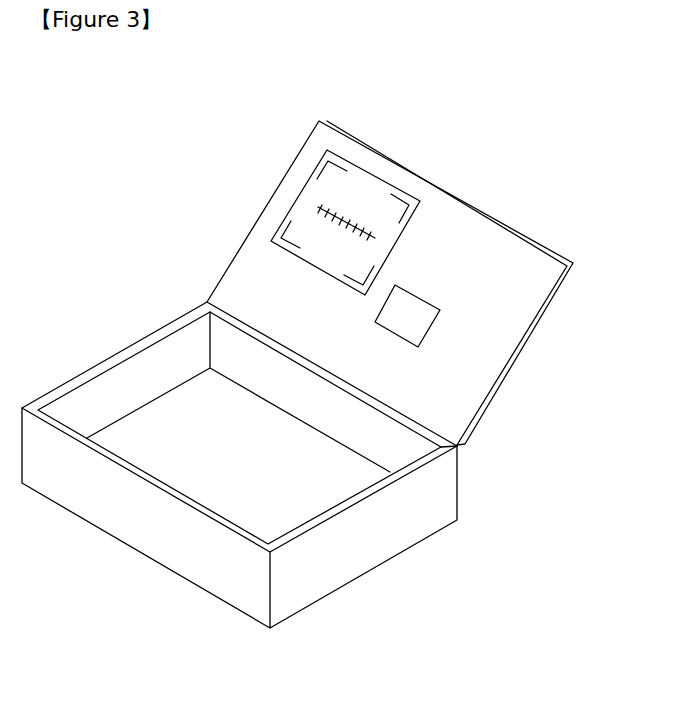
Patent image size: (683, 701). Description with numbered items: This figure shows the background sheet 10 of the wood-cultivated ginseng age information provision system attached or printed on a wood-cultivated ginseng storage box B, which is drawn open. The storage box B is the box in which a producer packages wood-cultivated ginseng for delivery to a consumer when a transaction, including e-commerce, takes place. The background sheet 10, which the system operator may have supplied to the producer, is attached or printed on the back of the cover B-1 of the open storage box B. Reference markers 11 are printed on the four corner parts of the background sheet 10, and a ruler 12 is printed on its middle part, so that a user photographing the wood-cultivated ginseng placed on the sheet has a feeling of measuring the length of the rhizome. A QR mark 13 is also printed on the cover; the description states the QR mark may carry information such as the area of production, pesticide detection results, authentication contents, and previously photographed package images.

The wood-cultivated ginseng storage box B is at (456, 493).
The cover B-1 is at (573, 264).
The background sheet 10 is at (362, 170).
The reference markers 11 is at (323, 168).
The ruler 12 is at (353, 223).
The QR code label 13 is at (432, 328).